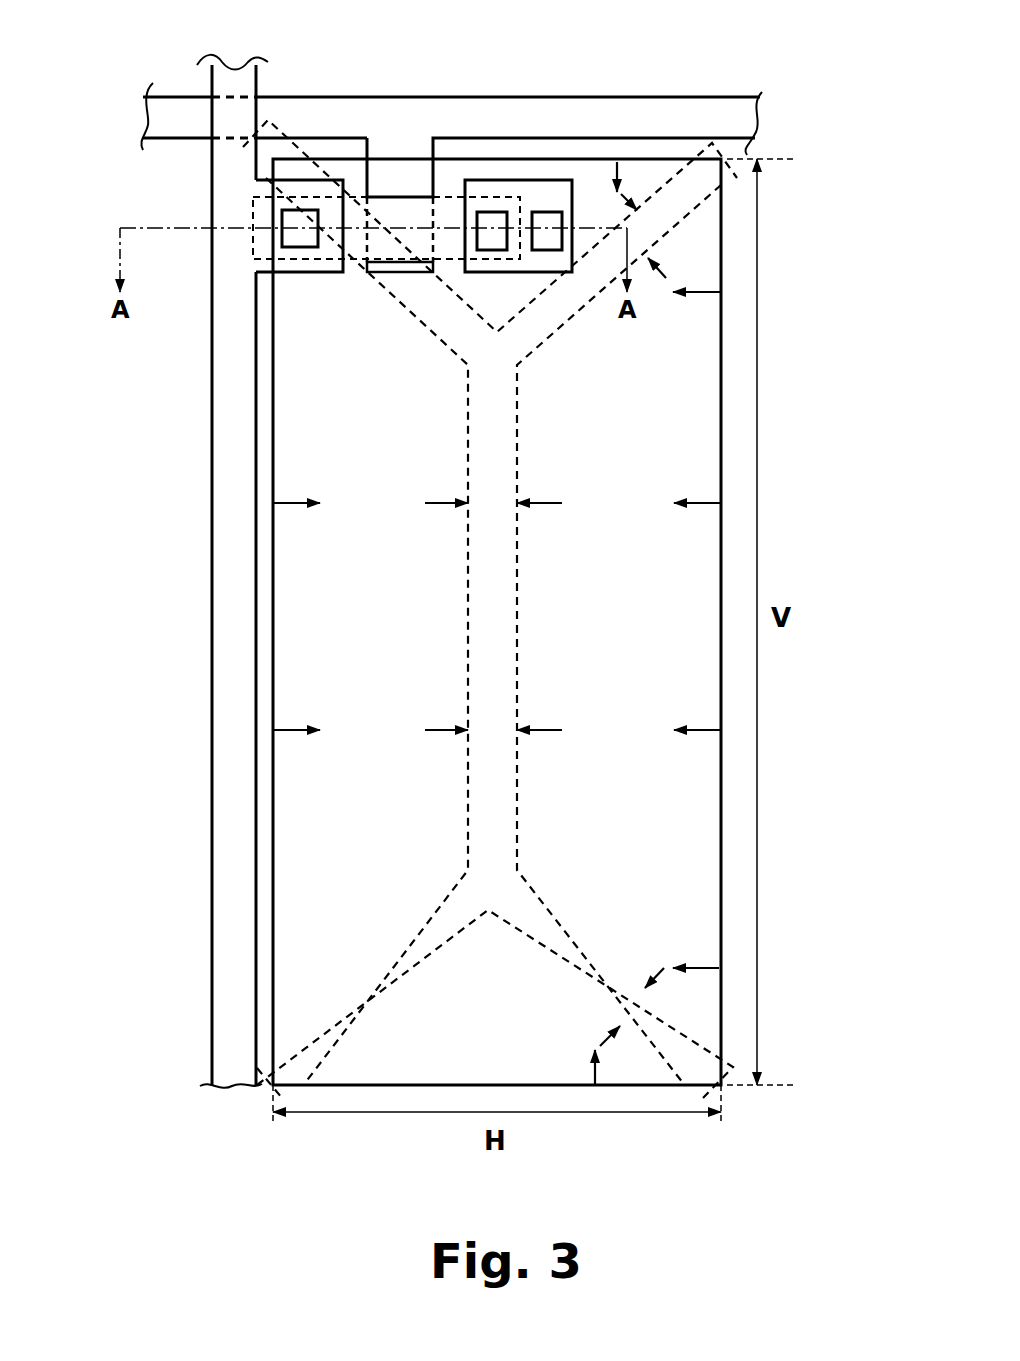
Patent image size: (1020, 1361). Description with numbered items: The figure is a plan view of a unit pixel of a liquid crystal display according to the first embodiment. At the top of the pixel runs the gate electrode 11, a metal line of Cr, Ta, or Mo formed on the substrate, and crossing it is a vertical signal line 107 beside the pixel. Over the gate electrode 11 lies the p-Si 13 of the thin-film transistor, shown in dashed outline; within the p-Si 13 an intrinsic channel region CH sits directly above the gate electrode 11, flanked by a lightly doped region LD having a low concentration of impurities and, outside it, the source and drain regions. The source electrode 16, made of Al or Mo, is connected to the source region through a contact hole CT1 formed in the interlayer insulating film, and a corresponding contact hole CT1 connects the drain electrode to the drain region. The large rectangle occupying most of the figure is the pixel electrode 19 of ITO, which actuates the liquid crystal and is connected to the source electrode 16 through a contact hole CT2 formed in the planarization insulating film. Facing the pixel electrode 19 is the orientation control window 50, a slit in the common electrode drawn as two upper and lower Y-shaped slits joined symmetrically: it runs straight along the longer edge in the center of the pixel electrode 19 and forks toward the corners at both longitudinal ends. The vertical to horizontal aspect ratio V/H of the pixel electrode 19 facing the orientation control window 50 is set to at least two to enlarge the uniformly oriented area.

The gate electrode 11 is at (412, 167).
The drain signal line 107 is at (293, 185).
The pixel electrode 19 is at (678, 275).
The p-Si 13 is at (354, 195).
The source electrode 16 is at (553, 200).
The channel region CH is at (378, 197).
The contact hole CT1 is at (487, 220).
The contact hole CT2 is at (577, 185).
The lightly doped region LD is at (350, 245).
The orientation control window 50 is at (493, 603).